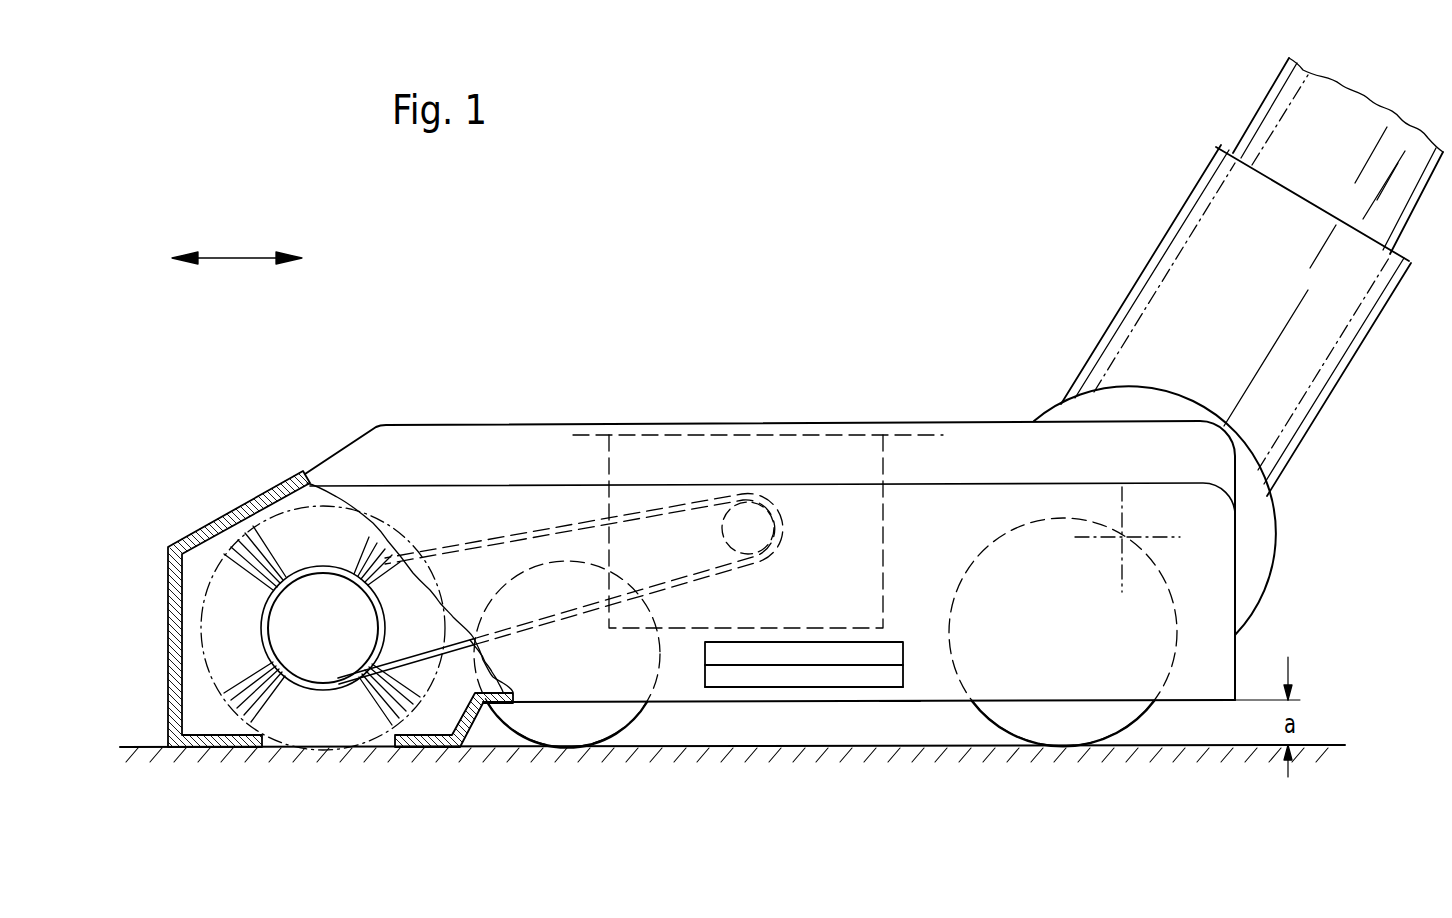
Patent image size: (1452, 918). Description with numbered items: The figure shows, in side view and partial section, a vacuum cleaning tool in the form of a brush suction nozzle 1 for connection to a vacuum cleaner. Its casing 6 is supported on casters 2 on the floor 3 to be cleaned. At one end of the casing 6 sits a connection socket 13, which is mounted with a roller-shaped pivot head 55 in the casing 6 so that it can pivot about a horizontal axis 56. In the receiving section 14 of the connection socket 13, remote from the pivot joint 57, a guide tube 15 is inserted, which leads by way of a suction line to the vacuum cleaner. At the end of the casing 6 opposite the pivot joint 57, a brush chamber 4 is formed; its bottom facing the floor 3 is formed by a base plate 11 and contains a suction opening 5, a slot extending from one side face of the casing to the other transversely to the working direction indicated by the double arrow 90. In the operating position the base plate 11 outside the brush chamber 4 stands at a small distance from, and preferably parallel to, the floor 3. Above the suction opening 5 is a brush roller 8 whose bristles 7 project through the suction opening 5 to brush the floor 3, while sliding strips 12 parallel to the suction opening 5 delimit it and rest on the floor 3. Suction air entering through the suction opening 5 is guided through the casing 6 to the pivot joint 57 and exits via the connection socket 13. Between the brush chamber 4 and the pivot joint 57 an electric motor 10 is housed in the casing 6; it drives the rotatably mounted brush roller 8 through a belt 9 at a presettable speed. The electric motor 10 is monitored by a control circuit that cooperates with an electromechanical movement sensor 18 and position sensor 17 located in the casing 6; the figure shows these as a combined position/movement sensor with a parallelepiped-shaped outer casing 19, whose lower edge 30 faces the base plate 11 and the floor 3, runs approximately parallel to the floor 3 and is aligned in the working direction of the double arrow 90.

The brush suction nozzle 1 is at (770, 481).
The casters 2 is at (561, 733).
The floor 3 is at (1215, 748).
The brush chamber 4 is at (200, 572).
The suction opening 5 is at (328, 748).
The casing 6 is at (803, 423).
The bristles 7 is at (253, 578).
The brush roller 8 is at (273, 632).
The belt 9 is at (477, 533).
The electric motor 10 is at (700, 435).
The base plate 11 is at (672, 703).
The sliding strips 12 is at (220, 748).
The connection socket 13 is at (1236, 289).
The receiving section 14 is at (1232, 161).
The guide tube 15 is at (1294, 126).
The position sensor 17 is at (860, 689).
The movement sensor 18 is at (781, 679).
The outer casing 19 is at (898, 703).
The lower edge 30 is at (720, 689).
The pivot head 55 is at (1265, 540).
The horizontal axis 56 is at (1121, 539).
The pivot joint 57 is at (1031, 370).
The double arrow 90 is at (242, 257).